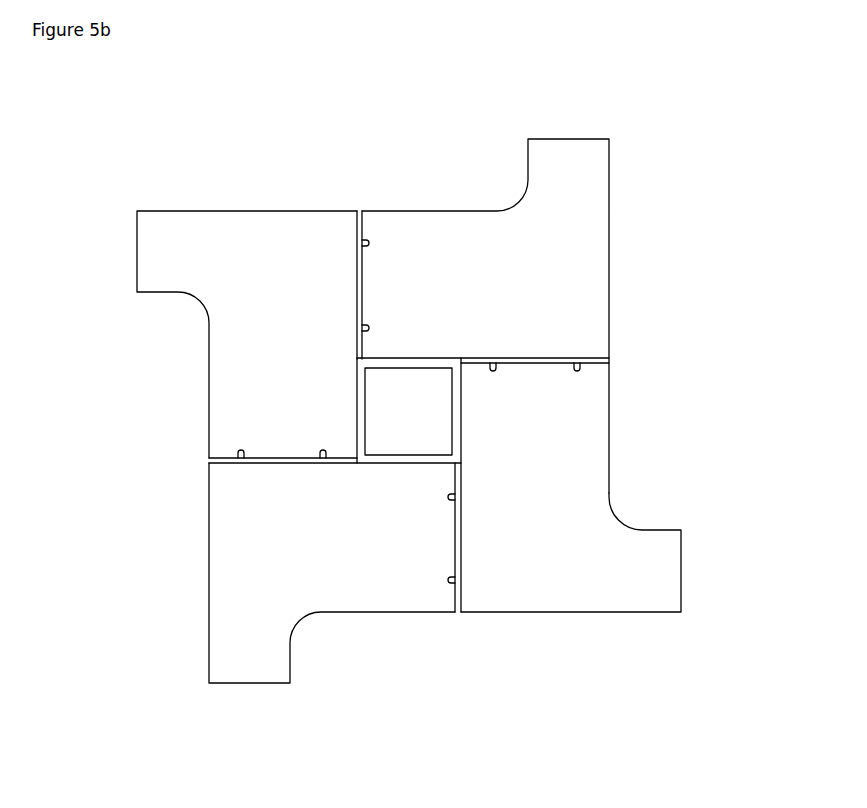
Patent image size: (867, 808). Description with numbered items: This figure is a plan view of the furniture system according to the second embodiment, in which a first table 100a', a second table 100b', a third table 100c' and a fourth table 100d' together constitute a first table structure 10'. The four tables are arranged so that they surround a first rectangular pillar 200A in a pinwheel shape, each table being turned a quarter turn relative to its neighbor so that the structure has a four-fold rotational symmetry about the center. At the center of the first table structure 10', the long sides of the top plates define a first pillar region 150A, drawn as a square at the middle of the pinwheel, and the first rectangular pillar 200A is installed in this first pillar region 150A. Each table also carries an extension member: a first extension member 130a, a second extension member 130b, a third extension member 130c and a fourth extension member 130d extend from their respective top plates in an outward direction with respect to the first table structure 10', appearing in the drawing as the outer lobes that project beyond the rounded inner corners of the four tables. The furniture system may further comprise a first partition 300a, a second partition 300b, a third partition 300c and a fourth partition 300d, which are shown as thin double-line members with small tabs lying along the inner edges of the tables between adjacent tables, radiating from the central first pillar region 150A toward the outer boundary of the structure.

The first table structure 10' is at (422, 396).
The first table 100a' is at (260, 573).
The second table 100b' is at (247, 288).
The third table 100c' is at (549, 316).
The fourth table 100d' is at (571, 606).
The first extension member 130a is at (251, 660).
The second extension member 130b is at (157, 258).
The third extension member 130c is at (559, 161).
The fourth extension member 130d is at (658, 570).
The first pillar region 150A is at (411, 397).
The first rectangular pillar 200A is at (478, 413).
The first partition 300a is at (224, 462).
The second partition 300b is at (357, 237).
The third partition 300c is at (595, 357).
The fourth partition 300d is at (462, 595).